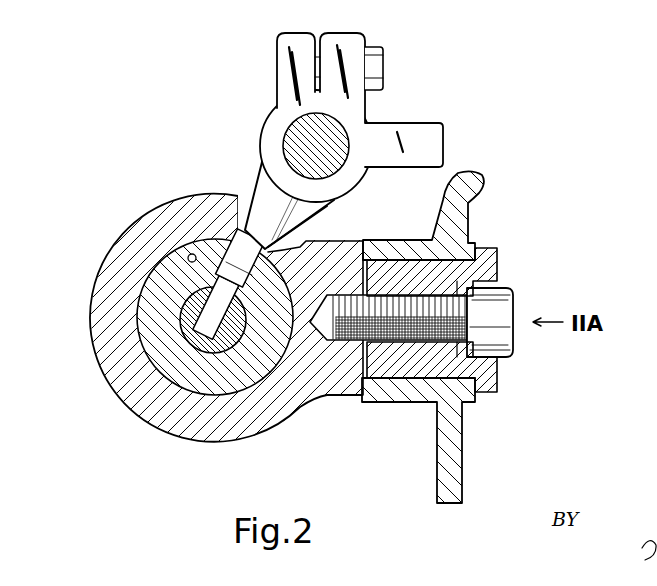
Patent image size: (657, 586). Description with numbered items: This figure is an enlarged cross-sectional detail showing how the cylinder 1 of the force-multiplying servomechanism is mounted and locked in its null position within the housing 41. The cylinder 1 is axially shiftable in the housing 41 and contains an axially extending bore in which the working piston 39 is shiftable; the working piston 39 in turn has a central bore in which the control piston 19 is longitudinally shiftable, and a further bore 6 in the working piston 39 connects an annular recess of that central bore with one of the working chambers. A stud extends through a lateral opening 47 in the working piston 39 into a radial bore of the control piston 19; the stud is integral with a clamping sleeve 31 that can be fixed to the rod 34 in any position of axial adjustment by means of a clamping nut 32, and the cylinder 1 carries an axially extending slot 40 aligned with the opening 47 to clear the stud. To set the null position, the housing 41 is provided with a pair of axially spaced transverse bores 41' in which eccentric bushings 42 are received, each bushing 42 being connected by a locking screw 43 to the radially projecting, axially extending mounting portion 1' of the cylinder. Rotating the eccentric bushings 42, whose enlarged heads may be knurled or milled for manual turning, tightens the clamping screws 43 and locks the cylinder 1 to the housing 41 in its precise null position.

The cylinder 1 is at (223, 323).
The mounting portion 1' is at (340, 349).
The bore 6 is at (188, 256).
The control piston 19 is at (180, 306).
The clamping sleeve 31 is at (282, 113).
The clamping nut 32 is at (378, 70).
The rod 34 is at (283, 140).
The working piston 39 is at (223, 390).
The slot 40 is at (300, 240).
The housing 41 is at (453, 277).
The transverse bores 41' is at (429, 386).
The eccentric bushing 42 is at (500, 260).
The locking screw 43 is at (503, 350).
The opening 47 is at (220, 266).